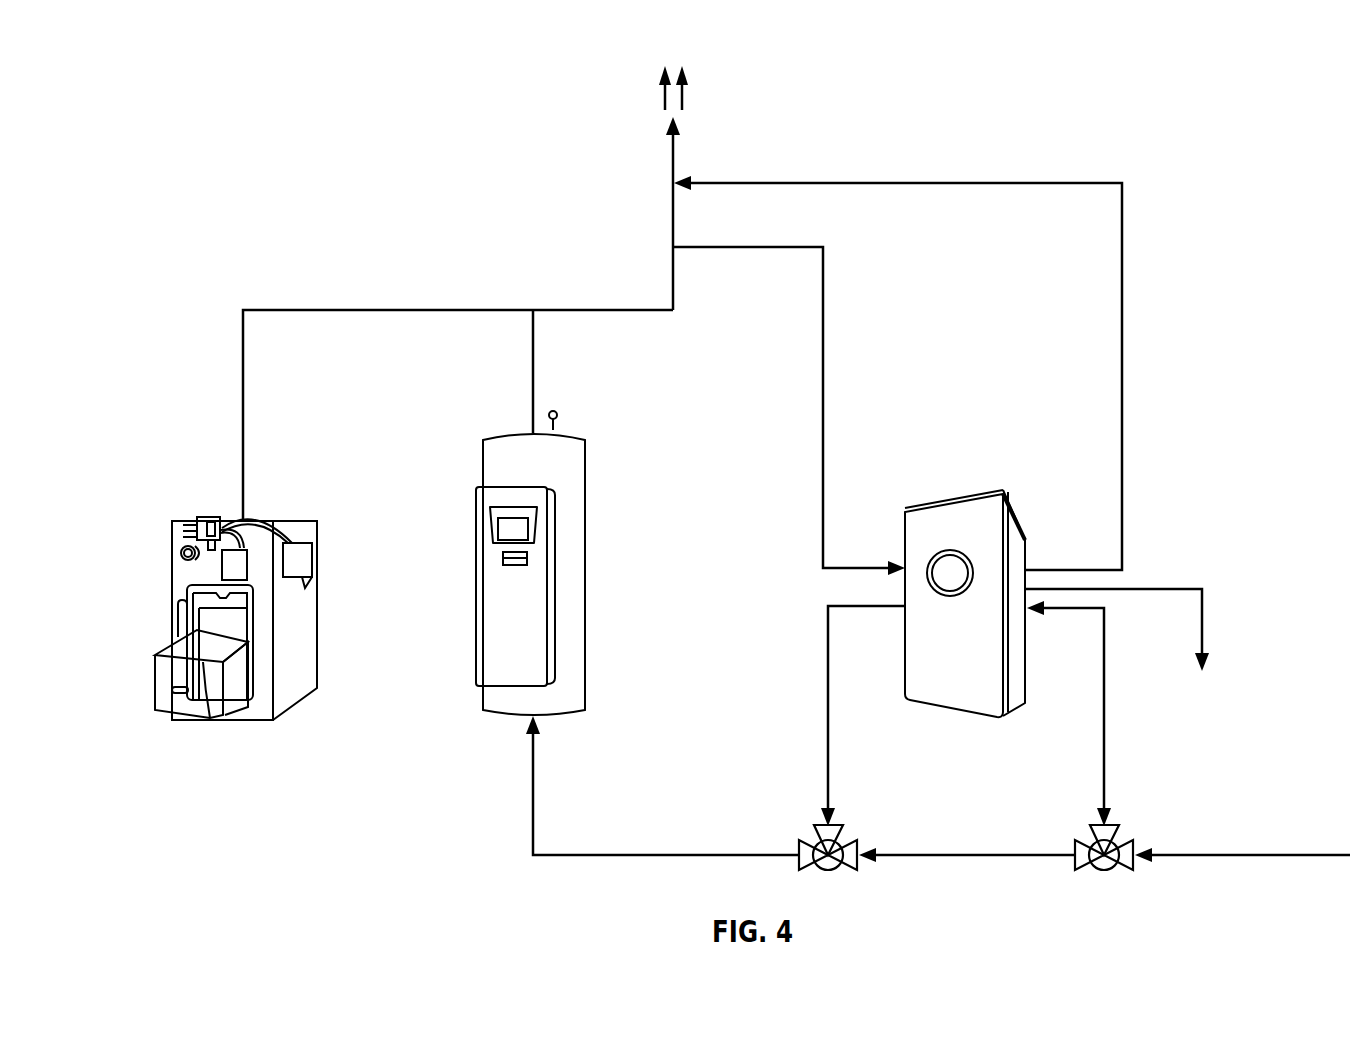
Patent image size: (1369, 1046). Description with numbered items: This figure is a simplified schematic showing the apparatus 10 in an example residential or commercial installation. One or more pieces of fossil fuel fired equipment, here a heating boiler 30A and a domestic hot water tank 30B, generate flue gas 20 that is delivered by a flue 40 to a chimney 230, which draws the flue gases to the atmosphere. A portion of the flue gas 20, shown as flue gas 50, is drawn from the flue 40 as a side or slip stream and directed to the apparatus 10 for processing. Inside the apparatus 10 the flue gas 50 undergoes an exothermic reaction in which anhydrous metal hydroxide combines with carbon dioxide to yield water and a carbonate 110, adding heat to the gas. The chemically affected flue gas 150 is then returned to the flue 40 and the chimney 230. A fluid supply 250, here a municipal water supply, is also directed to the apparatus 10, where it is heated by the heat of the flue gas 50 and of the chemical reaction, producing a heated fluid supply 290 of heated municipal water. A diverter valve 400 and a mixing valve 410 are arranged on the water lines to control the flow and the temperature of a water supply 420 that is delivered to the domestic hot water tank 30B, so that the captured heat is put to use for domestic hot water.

The apparatus 10 is at (1003, 468).
The flue gases 20 is at (685, 88).
The heating boiler 30A is at (192, 713).
The domestic hot water tank 30B is at (500, 718).
The flue 40 is at (460, 308).
The flue gas 50 is at (822, 405).
The carbonate 110 is at (1160, 585).
The chemically affected flue gas 150 is at (662, 88).
The chimney 230 is at (670, 120).
The fluid supply 250 is at (1242, 857).
The heated fluid supply 290 is at (825, 717).
The diverter valve 400 is at (1103, 868).
The mixing valve 410 is at (830, 868).
The water supply 420 is at (665, 857).